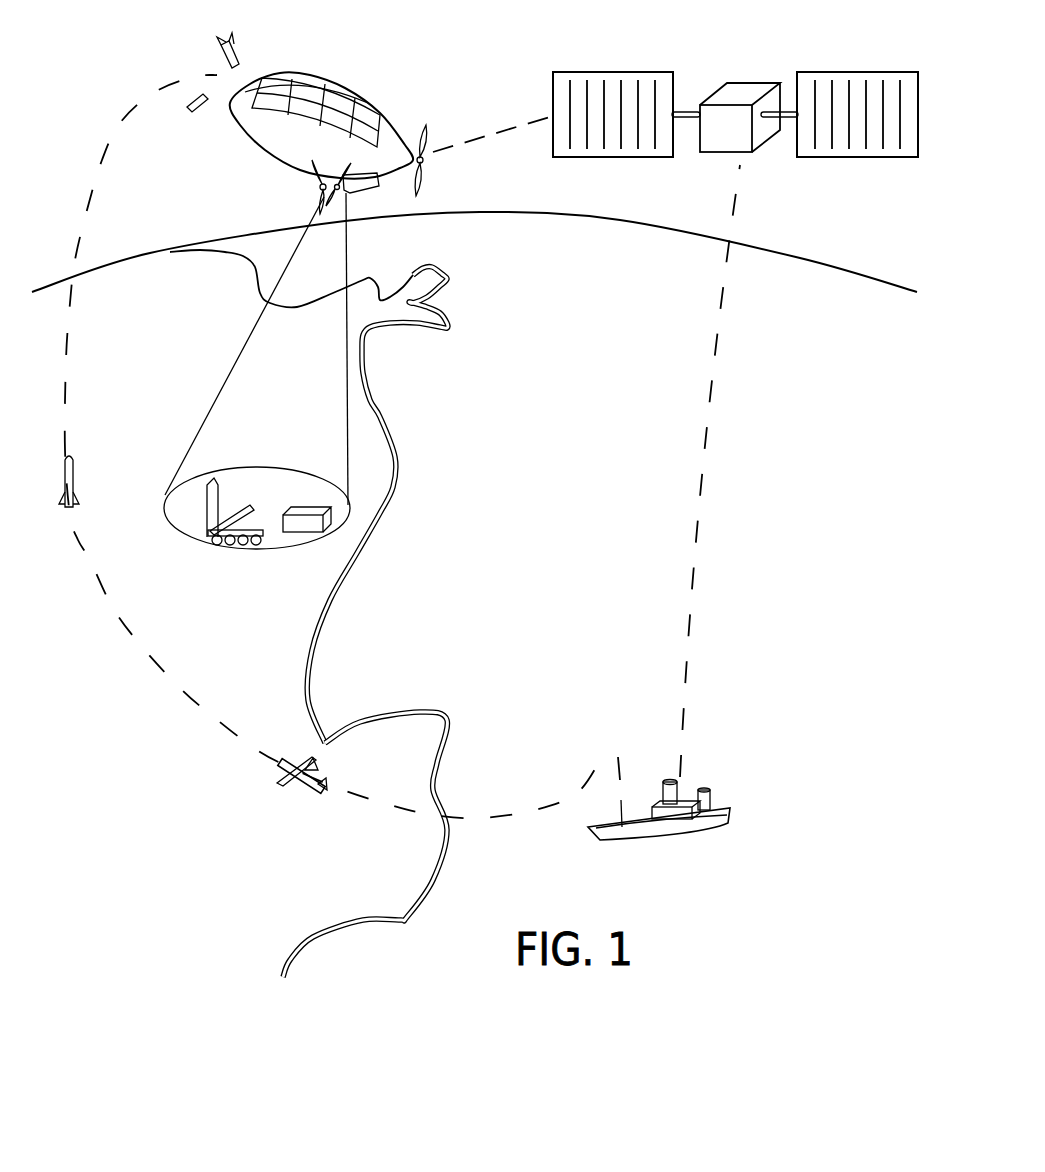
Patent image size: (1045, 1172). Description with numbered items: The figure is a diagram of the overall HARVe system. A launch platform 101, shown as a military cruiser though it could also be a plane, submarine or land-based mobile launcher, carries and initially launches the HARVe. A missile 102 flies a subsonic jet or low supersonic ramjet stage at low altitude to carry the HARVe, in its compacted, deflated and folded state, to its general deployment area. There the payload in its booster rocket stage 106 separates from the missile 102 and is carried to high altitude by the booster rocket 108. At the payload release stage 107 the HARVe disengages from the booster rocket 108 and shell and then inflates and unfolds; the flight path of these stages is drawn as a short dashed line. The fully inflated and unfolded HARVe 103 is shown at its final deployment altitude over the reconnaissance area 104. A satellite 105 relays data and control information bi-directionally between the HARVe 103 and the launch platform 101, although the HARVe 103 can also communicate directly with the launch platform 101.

The launch platform 101 is at (723, 800).
The missile 102 is at (277, 763).
The HARVe 103 is at (377, 112).
The reconnaissance area 104 is at (280, 552).
The satellite 105 is at (750, 80).
The booster rocket stage 106 is at (73, 473).
The payload release stage 107 is at (205, 104).
The booster rocket 108 is at (238, 48).